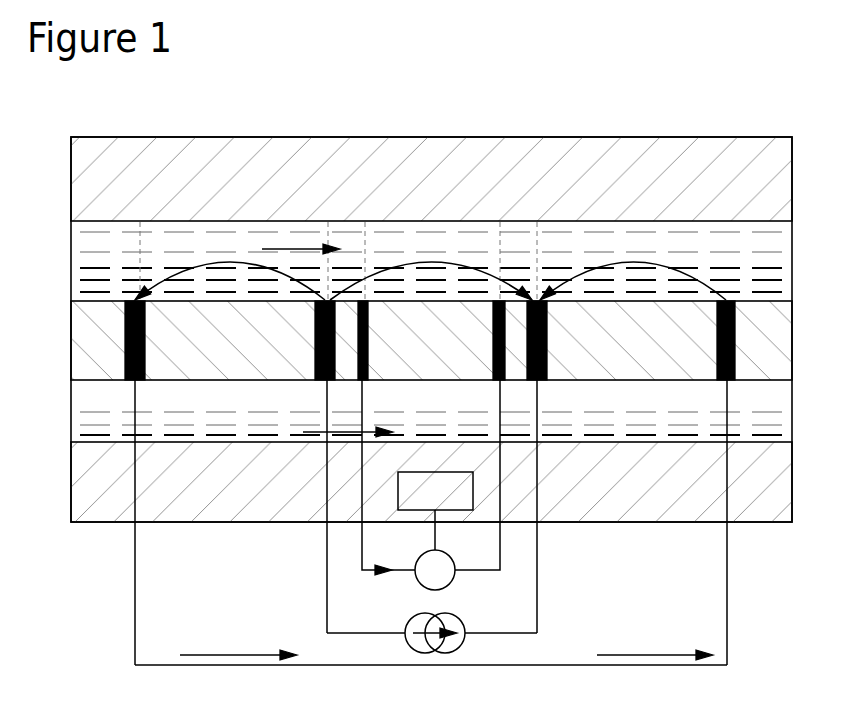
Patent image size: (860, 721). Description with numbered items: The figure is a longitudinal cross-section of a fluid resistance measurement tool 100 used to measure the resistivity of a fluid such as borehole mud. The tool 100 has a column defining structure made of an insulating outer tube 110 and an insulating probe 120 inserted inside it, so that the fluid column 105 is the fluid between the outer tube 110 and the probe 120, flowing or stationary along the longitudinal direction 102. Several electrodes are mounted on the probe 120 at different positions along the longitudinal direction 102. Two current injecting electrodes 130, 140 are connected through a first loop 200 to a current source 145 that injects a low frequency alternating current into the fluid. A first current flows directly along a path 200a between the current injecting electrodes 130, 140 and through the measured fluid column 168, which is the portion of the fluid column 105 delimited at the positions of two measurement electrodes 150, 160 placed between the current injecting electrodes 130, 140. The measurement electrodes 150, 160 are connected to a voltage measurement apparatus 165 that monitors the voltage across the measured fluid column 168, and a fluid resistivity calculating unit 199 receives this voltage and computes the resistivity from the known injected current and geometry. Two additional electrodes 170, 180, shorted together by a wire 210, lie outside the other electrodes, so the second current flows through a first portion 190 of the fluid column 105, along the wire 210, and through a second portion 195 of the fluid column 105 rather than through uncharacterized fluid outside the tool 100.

The fluid resistance measurement tool 100 is at (777, 112).
The longitudinal direction 102 is at (327, 330).
The fluid column 105 is at (78, 266).
The outer tube 110 is at (76, 176).
The probe 120 is at (78, 341).
The current injecting electrode 130 is at (315, 333).
The current injecting electrode 140 is at (546, 333).
The current source 145 is at (451, 618).
The measurement electrode 150 is at (368, 333).
The measurement electrode 160 is at (412, 410).
The voltage measurement apparatus 165 is at (444, 556).
The measured fluid column 168 is at (452, 290).
The additional electrode 170 is at (125, 330).
The additional electrode 180 is at (735, 337).
The first portion of the fluid column 190 is at (232, 410).
The second portion of the fluid column 195 is at (596, 415).
The fluid resistivity calculating unit 199 is at (433, 470).
The first loop 200 is at (537, 583).
The path 200a is at (531, 290).
The wire 210 is at (548, 666).